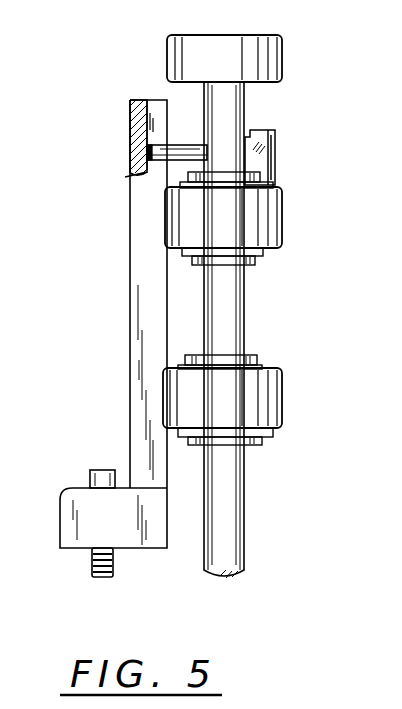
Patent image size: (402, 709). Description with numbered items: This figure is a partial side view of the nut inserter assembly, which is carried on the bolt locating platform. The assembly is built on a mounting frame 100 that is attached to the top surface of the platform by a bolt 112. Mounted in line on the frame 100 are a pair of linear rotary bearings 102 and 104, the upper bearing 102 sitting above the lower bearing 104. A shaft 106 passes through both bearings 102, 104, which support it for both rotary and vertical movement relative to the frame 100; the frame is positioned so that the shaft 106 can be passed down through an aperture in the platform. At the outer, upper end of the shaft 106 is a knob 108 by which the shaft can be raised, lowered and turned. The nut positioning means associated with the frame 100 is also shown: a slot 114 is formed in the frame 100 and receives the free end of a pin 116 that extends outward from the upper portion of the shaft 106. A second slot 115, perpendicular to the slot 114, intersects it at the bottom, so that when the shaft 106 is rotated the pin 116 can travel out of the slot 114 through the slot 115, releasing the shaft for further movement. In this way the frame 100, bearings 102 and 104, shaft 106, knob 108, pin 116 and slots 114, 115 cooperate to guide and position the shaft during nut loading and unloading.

The mounting frame 100 is at (130, 313).
The linear rotary bearing 102 is at (230, 232).
The linear rotary bearing 104 is at (230, 413).
The shaft 106 is at (248, 308).
The knob 108 is at (222, 36).
The bolt 112 is at (93, 470).
The slot 114 is at (145, 100).
The second slot 115 is at (133, 167).
The pin 116 is at (190, 147).